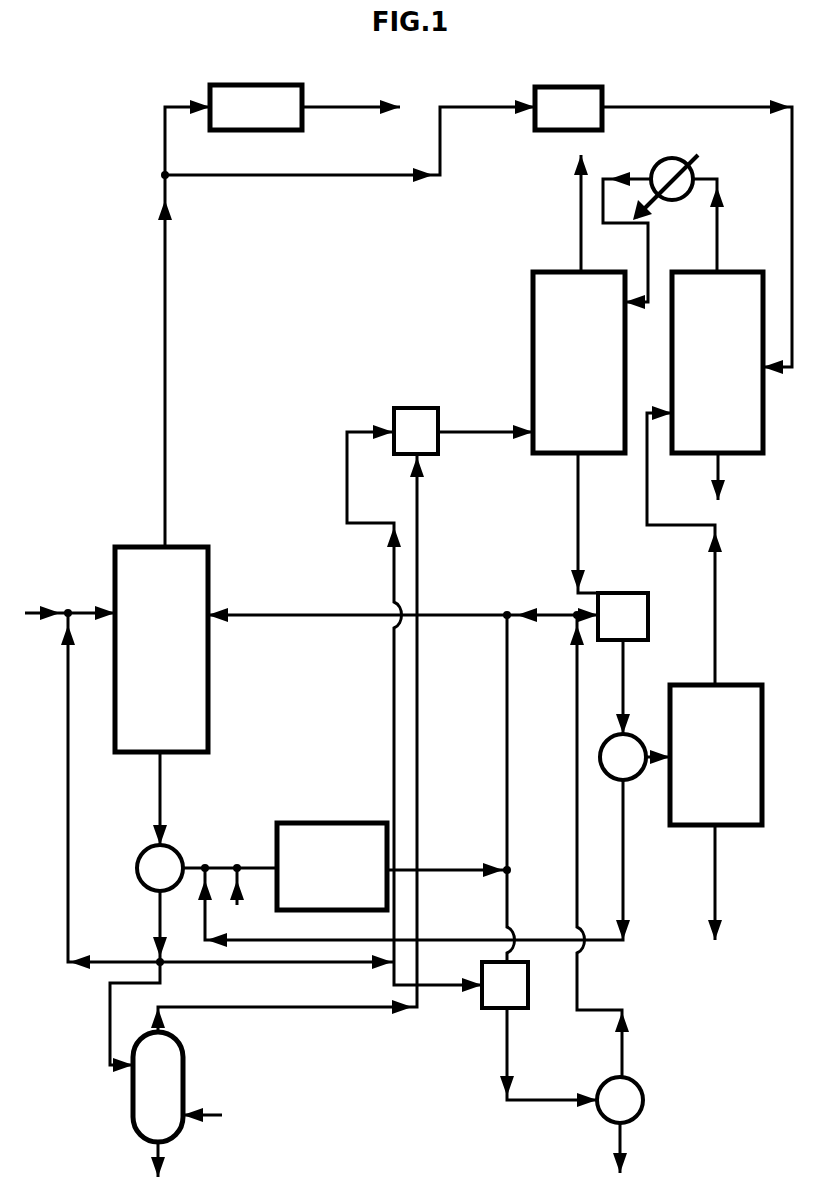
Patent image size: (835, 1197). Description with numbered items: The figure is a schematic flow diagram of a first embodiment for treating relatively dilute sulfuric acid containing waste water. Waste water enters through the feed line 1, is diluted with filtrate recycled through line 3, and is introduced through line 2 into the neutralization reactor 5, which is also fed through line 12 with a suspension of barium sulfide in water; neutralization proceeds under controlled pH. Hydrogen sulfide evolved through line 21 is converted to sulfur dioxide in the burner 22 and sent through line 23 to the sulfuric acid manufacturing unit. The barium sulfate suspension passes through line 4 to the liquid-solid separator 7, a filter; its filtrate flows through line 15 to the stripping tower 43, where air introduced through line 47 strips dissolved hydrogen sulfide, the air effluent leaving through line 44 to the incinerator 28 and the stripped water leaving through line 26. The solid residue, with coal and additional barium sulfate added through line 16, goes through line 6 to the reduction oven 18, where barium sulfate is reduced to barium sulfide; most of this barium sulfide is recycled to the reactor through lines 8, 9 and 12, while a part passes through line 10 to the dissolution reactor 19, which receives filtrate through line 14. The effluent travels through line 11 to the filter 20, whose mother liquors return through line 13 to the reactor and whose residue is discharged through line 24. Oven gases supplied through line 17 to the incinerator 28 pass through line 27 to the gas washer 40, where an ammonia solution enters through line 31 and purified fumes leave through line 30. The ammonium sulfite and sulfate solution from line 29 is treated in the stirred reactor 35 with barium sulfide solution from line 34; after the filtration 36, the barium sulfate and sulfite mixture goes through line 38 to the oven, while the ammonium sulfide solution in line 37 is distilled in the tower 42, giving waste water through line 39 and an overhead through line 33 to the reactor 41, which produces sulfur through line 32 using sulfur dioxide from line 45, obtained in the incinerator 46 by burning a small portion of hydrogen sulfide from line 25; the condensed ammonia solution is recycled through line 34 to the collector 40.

The feed line 1 is at (30, 610).
The diluted waste water line 2 is at (87, 610).
The filtrate recycle line 3 is at (65, 745).
The suspension line 4 is at (158, 795).
The neutralization reactor 5 is at (115, 547).
The solid residue line 6 is at (255, 860).
The liquid-solid separator 7 is at (137, 860).
The barium sulfide recycle line 8 is at (453, 867).
The barium sulfide recycle line 9 is at (505, 746).
The barium sulfide line to dissolution reactor 10 is at (505, 908).
The effluent line 11 is at (503, 1048).
The barium sulfide suspension feed line 12 is at (310, 612).
The mother liquor return line 13 is at (575, 770).
The filtrate line to dissolution reactor 14 is at (222, 963).
The filtrate line 15 is at (108, 1023).
The additional barium sulfate line 16 is at (237, 905).
The oven gas line 17 is at (345, 468).
The reduction oven 18 is at (325, 823).
The dissolution reactor 19 is at (487, 1010).
The filter 20 is at (645, 1100).
The hydrogen sulfide line 21 is at (162, 305).
The burner 22 is at (258, 85).
The sulfur dioxide line 23 is at (350, 105).
The residue discharge line 24 is at (627, 1146).
The hydrogen sulfide branch line 25 is at (350, 178).
The water outlet line 26 is at (150, 1158).
The incinerator fume line 27 is at (466, 430).
The incinerator 28 is at (416, 407).
The washer bottom line 29 is at (575, 508).
The purified fume outlet line 30 is at (578, 207).
The ammonia solution line 31 is at (636, 176).
The sulfur line 32 is at (733, 478).
The tower top line 33 is at (718, 573).
The barium sulfide solution line 34 is at (592, 612).
The stirred reactor 35 is at (640, 593).
The filtration 36 is at (609, 777).
The ammonium sulfide solution line 37 is at (653, 767).
The barium salts line 38 is at (627, 862).
The tower bottom line 39 is at (713, 905).
The gas washer 40 is at (533, 332).
The sulfur production reactor 41 is at (763, 445).
The distillation tower 42 is at (762, 755).
The stripping tower 43 is at (133, 1110).
The air effluent line 44 is at (237, 1008).
The sulfur dioxide feed line 45 is at (690, 106).
The incinerator 46 is at (564, 86).
The air inlet line 47 is at (222, 1115).